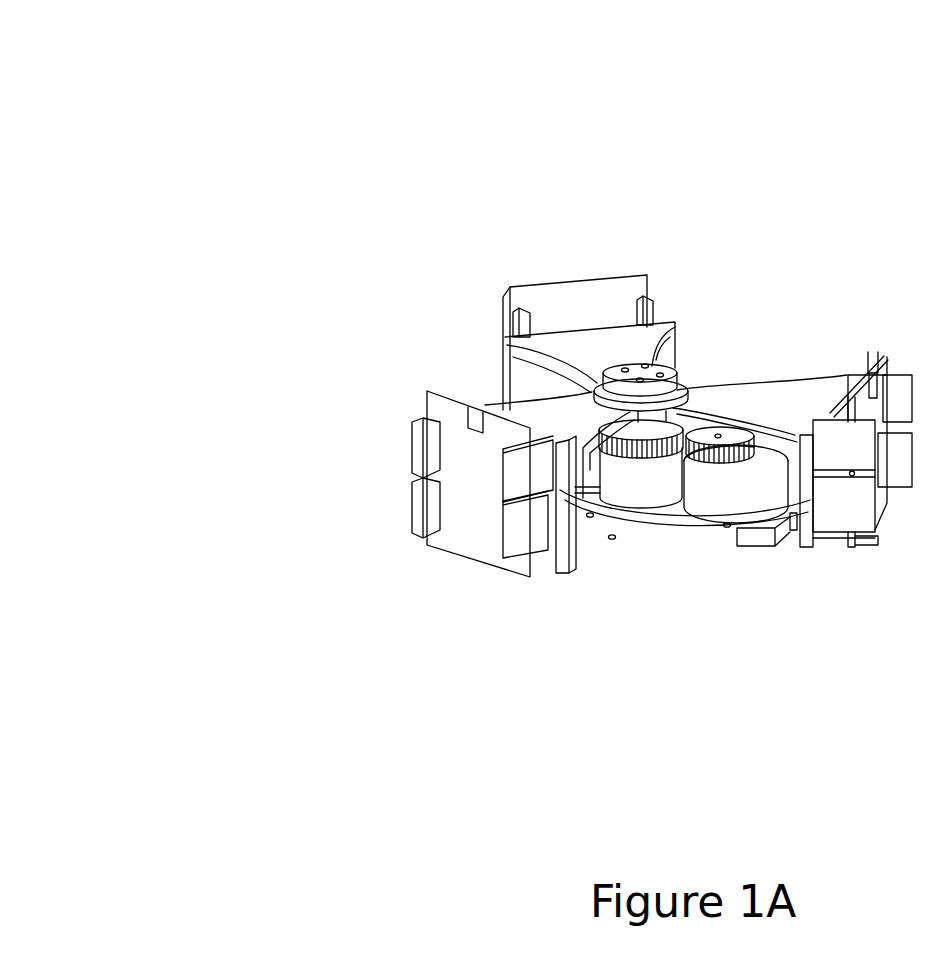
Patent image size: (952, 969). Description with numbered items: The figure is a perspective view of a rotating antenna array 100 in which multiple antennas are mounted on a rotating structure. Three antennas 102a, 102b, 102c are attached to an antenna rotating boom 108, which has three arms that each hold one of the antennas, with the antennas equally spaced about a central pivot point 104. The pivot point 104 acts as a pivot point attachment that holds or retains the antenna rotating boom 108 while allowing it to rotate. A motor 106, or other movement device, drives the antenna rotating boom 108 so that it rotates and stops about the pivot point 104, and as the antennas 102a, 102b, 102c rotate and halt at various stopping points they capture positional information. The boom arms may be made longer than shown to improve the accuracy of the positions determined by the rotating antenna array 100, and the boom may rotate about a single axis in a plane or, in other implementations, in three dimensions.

The rotating antenna array 100 is at (66, 66).
The antenna 102a is at (475, 410).
The antenna 102b is at (570, 282).
The antenna 102c is at (870, 372).
The pivot point 104 is at (668, 372).
The motor 106 is at (737, 510).
The antenna rotating boom 108 is at (623, 358).